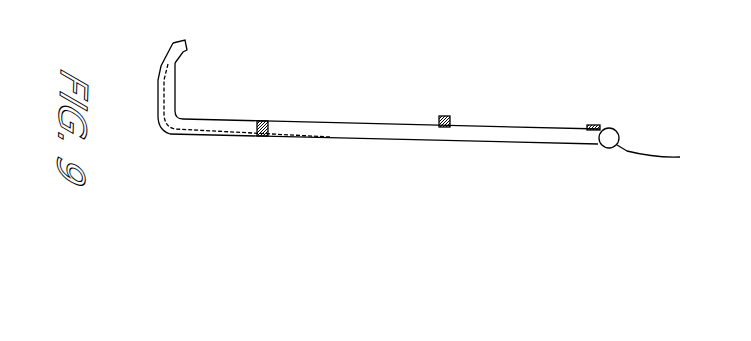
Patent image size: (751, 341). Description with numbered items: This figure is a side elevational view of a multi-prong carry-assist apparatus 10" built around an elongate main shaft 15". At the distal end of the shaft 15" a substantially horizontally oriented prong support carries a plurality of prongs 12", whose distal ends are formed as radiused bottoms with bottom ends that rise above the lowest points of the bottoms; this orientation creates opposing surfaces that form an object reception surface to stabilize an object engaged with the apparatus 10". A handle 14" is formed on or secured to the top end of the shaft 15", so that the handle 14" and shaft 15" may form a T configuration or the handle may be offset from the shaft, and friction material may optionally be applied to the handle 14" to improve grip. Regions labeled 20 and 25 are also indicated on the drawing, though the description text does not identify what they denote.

The multi-prong carry-assist apparatus 10 is at (403, 151).
The prong 12 is at (284, 227).
The handle 14 is at (727, 212).
The elongate main shaft 15 is at (442, 117).
The hook bend 20 is at (178, 101).
The hook tip 25 is at (168, 50).